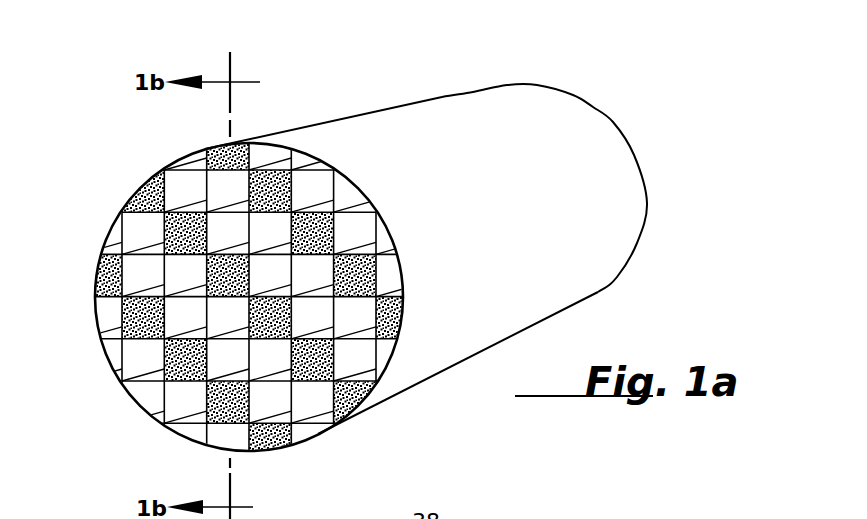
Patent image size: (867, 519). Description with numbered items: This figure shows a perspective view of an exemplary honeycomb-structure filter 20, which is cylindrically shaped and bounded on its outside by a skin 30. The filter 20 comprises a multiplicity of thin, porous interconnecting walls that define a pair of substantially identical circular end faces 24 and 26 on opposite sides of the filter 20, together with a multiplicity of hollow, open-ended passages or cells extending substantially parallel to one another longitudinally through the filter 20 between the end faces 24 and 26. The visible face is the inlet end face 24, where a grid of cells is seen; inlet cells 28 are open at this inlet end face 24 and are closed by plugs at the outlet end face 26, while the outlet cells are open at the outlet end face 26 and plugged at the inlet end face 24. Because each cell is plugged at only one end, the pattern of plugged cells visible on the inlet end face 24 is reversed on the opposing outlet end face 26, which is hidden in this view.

The filter 20 is at (449, 94).
The inlet end face 24 is at (117, 240).
The outlet end face 26 is at (648, 207).
The inlet cells 28 is at (227, 185).
The skin 30 is at (523, 224).